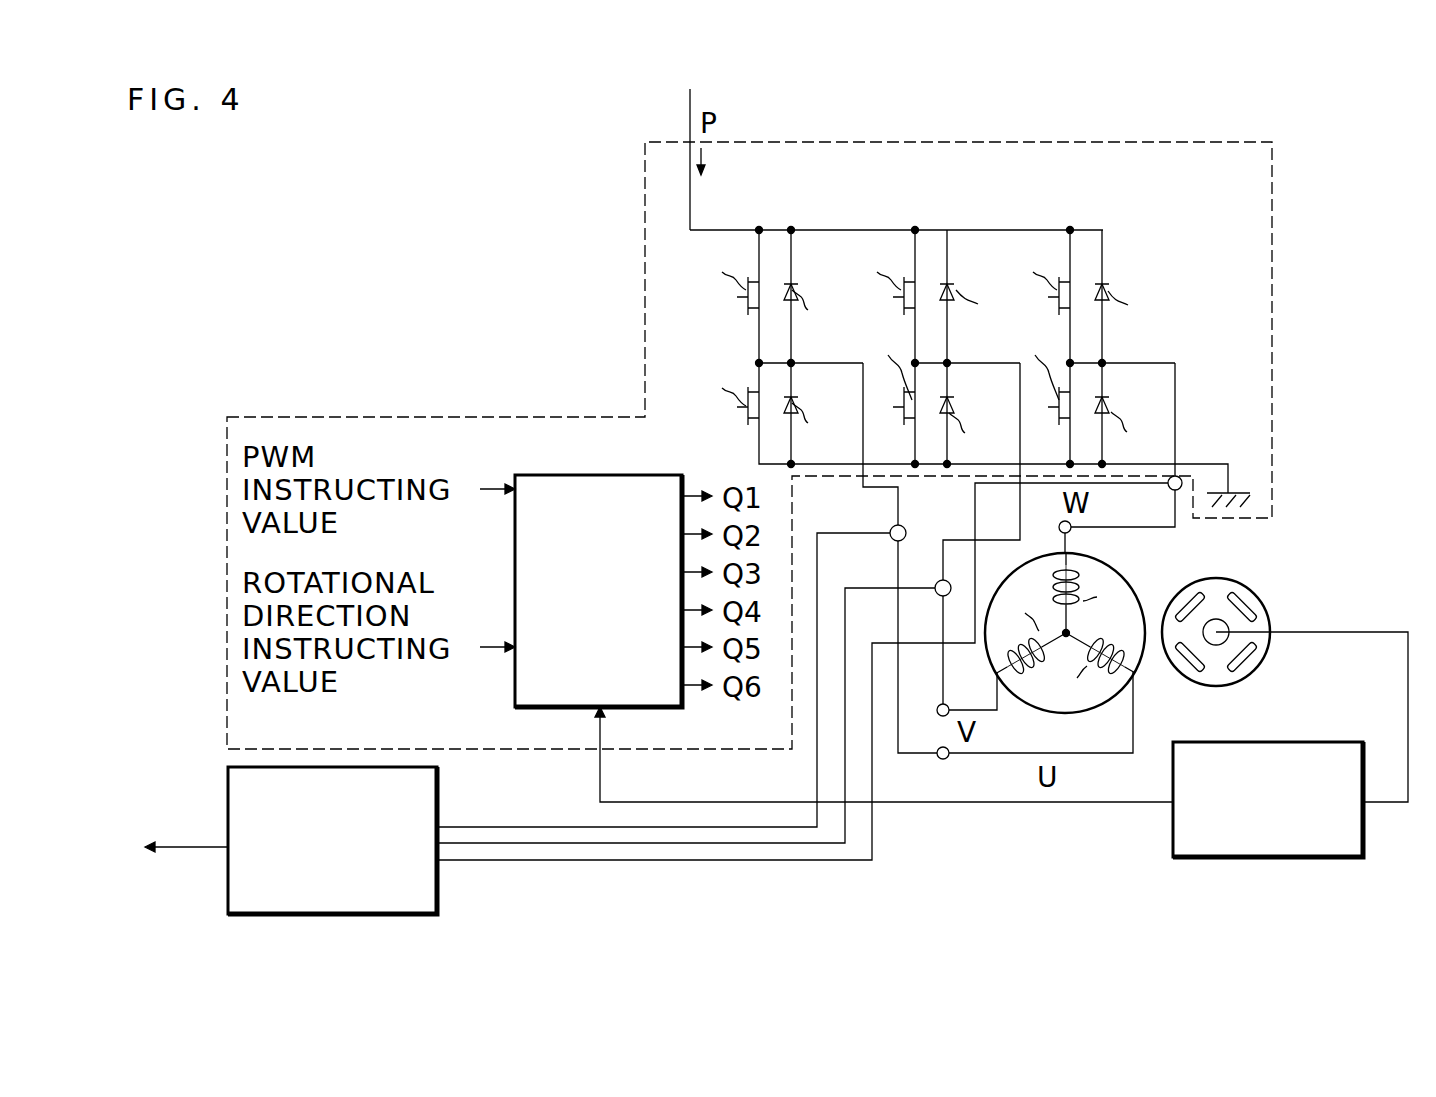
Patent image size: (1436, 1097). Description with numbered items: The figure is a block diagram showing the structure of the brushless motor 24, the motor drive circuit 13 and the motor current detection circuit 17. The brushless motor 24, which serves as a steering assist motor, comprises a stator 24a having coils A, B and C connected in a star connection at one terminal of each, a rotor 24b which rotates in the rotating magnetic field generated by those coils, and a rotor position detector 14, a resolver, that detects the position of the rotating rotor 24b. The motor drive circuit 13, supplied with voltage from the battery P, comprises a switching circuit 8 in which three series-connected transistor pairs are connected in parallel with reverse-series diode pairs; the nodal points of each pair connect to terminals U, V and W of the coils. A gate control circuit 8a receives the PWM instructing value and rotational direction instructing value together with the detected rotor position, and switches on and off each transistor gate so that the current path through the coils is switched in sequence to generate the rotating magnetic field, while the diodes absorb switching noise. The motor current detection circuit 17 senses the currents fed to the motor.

The switching circuit 8 is at (1017, 222).
The gate control circuit 8a is at (515, 672).
The motor drive circuit 13 is at (1272, 234).
The rotor position detector 14 is at (1237, 742).
The motor current detection circuit 17 is at (437, 891).
The brushless motor 24 is at (1266, 587).
The stator 24a is at (1131, 578).
The rotor 24b is at (1283, 553).